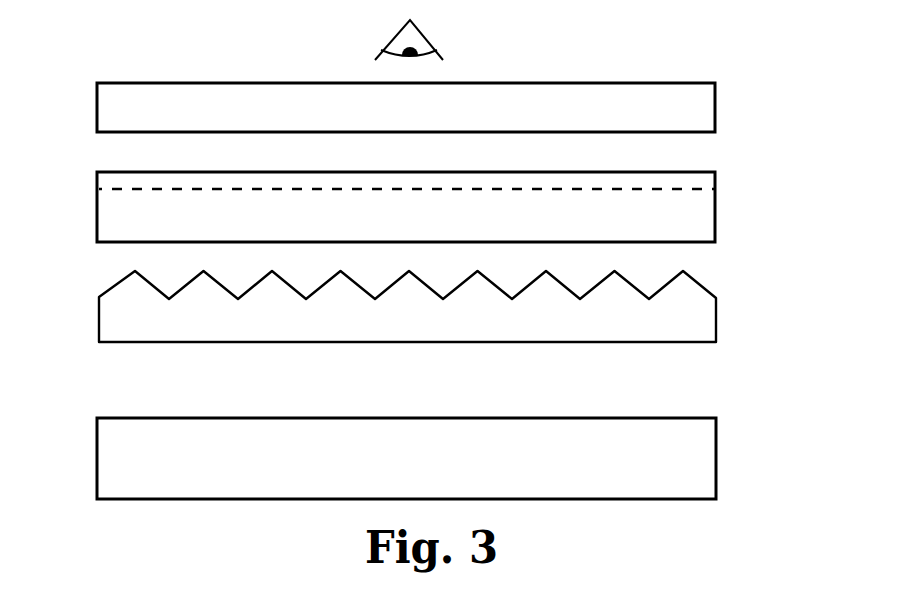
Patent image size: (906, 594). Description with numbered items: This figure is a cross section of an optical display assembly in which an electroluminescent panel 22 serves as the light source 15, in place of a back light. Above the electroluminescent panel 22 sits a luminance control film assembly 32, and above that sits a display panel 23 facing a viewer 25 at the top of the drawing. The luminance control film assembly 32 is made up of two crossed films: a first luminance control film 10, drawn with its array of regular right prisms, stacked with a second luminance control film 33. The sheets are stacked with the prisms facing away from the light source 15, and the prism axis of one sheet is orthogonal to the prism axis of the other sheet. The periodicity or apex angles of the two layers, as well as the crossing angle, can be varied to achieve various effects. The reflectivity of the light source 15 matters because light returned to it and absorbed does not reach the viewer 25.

The first luminance control film 10 is at (700, 323).
The light source 15 is at (722, 417).
The electroluminescent panel 22 is at (695, 453).
The display panel 23 is at (695, 105).
The viewer 25 is at (423, 30).
The luminance control film assembly 32 is at (415, 268).
The second luminance control film 33 is at (692, 208).